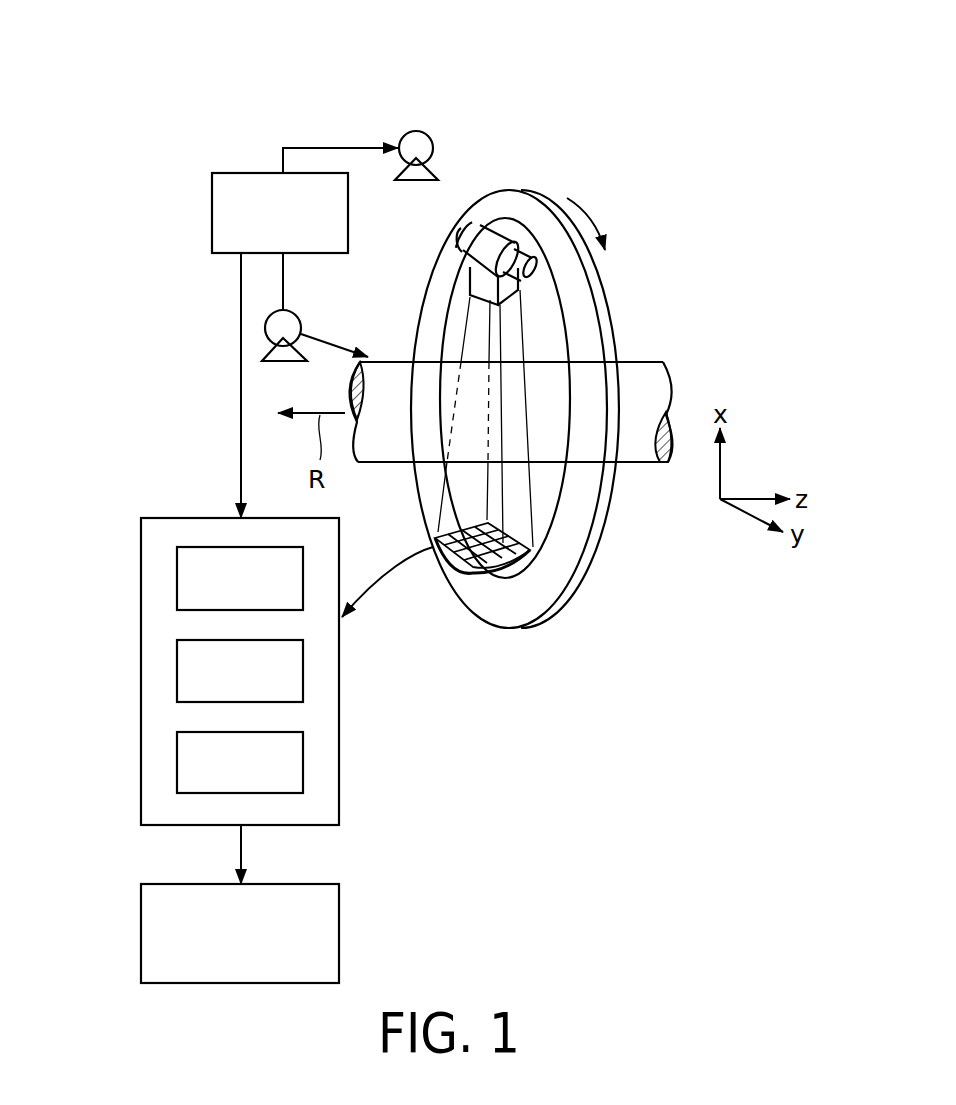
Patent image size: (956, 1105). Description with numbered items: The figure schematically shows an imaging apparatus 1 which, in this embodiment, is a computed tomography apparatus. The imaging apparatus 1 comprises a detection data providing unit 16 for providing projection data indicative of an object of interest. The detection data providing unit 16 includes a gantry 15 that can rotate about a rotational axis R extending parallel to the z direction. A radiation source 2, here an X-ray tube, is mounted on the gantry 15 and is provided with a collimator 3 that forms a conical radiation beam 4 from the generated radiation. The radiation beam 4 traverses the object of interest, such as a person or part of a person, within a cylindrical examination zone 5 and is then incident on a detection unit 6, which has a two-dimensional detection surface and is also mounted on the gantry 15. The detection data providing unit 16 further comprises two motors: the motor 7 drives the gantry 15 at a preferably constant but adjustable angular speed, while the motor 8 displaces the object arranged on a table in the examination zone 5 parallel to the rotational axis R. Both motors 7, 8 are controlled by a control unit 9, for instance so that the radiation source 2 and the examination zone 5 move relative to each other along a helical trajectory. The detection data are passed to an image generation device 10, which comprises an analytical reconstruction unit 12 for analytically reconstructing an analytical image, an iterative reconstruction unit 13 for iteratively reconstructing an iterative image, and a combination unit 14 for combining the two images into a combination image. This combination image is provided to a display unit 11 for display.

The imaging apparatus 1 is at (572, 87).
The radiation source 2 is at (485, 235).
The collimator 3 is at (513, 290).
The radiation beam 4 is at (503, 510).
The examination zone 5 is at (390, 362).
The detection unit 6 is at (468, 578).
The motor 7 is at (428, 130).
The motor 8 is at (300, 313).
The control unit 9 is at (228, 173).
The image generation device 10 is at (340, 718).
The display unit 11 is at (141, 936).
The analytical reconstruction unit 12 is at (177, 577).
The iterative reconstruction unit 13 is at (177, 677).
The combination unit 14 is at (177, 772).
The gantry 15 is at (565, 557).
The detection data providing unit 16 is at (640, 213).